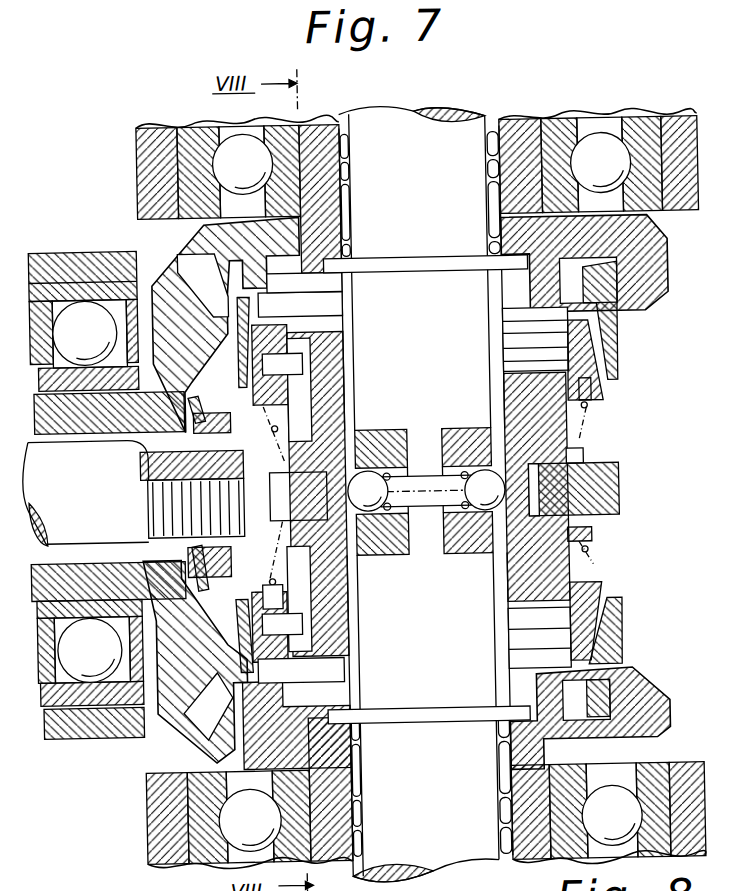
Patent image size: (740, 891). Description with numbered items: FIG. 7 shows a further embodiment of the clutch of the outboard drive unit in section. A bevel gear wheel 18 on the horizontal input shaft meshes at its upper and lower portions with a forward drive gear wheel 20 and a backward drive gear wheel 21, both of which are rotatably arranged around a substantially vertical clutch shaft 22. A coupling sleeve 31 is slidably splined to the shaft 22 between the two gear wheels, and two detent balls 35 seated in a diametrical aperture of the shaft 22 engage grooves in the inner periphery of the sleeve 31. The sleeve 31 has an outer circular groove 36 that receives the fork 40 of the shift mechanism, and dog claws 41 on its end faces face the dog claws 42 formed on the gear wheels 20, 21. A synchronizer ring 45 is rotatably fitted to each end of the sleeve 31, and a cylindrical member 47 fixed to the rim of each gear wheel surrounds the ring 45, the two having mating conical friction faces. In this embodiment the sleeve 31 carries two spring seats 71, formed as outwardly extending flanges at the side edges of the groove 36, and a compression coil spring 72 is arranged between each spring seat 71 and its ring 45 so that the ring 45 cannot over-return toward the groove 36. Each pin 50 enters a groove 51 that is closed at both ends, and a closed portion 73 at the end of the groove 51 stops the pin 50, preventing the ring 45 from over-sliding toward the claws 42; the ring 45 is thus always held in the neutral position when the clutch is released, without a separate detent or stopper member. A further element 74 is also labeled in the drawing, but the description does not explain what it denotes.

The bevel gear wheel 18 is at (98, 418).
The forward drive gear wheel 20 is at (326, 237).
The backward drive gear wheel 21 is at (353, 752).
The clutch shaft 22 is at (448, 304).
The coupling sleeve 31 is at (560, 543).
The detent ball 35 is at (466, 491).
The circular groove 36 is at (326, 503).
The fork 40 is at (612, 501).
The dog claws 41 is at (333, 341).
The dog claws 42 is at (543, 297).
The synchronizer ring 45 is at (600, 397).
The cylindrical member 47 is at (612, 338).
The pin 50 is at (294, 362).
The groove 51 is at (304, 403).
The spring seat 71 is at (284, 531).
The compression coil spring 72 is at (277, 428).
The closed portion 73 is at (304, 338).
The pin 74 is at (252, 585).